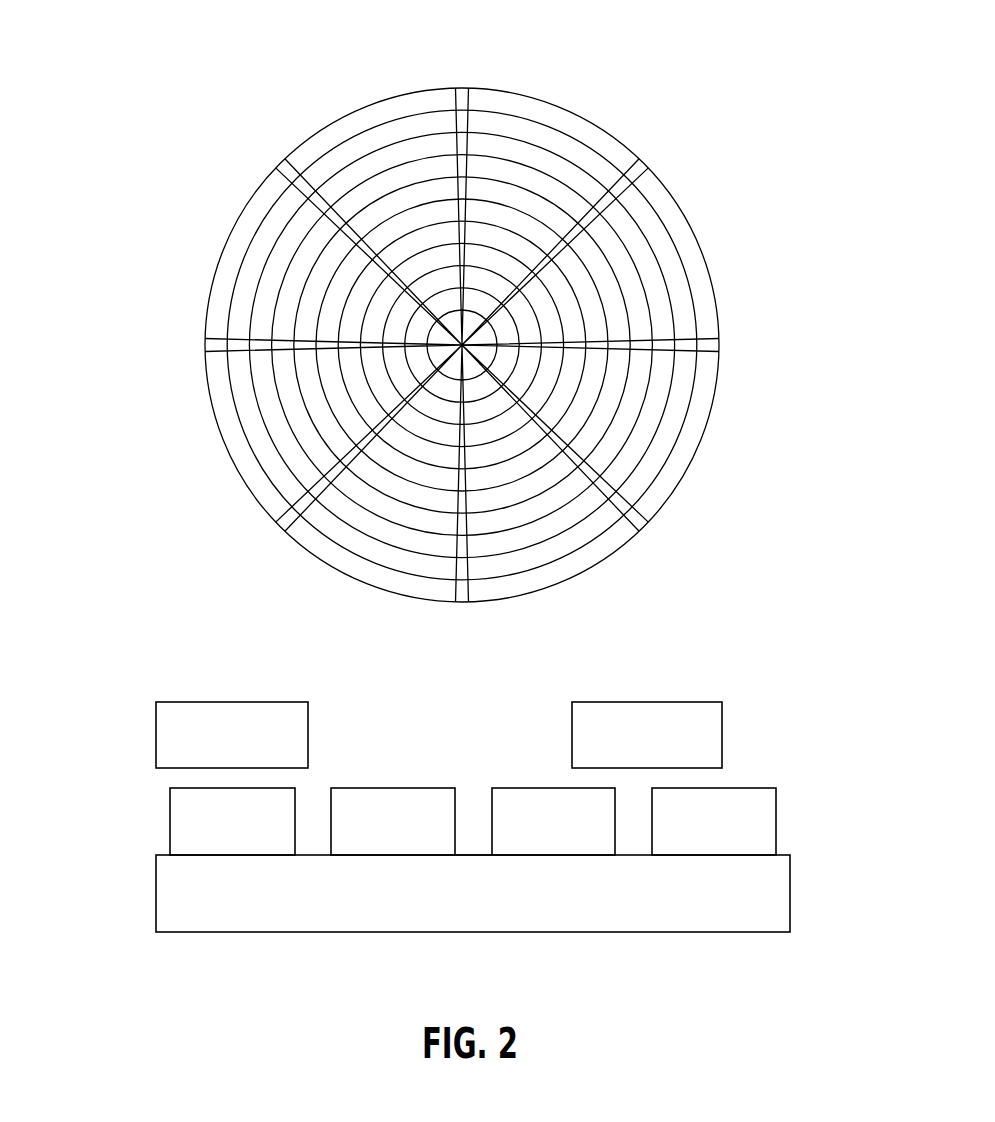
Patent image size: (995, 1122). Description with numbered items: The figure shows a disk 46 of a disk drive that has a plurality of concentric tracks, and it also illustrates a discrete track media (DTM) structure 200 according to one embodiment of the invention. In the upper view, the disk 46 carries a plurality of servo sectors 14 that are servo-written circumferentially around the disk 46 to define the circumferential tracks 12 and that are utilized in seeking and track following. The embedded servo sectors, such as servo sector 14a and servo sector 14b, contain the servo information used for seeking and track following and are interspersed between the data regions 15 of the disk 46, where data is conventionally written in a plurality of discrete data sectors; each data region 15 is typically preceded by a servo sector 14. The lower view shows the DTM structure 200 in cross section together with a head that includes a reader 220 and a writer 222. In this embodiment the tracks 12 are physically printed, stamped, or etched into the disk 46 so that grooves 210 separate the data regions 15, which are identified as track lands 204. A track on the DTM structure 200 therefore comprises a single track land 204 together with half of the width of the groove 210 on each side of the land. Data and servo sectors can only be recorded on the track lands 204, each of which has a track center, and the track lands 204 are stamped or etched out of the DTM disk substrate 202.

The disk 46 is at (300, 68).
The tracks 12 is at (245, 248).
The servo sectors 14 is at (462, 93).
The servo sector 14a is at (282, 170).
The servo sector 14b is at (212, 347).
The data regions 15 is at (527, 132).
The DTM structure 200 is at (131, 822).
The DTM disk substrate 202 is at (792, 893).
The track lands 204 is at (743, 787).
The grooves 210 is at (475, 778).
The reader 220 is at (190, 701).
The writer 222 is at (662, 701).